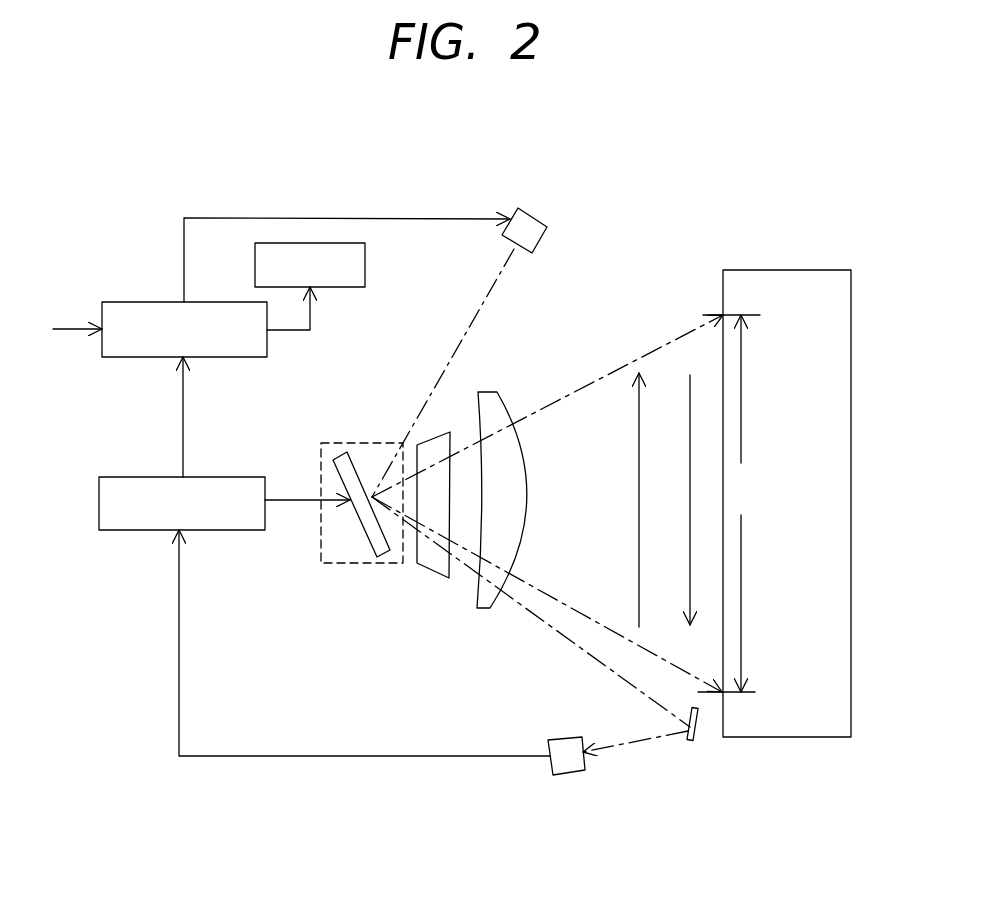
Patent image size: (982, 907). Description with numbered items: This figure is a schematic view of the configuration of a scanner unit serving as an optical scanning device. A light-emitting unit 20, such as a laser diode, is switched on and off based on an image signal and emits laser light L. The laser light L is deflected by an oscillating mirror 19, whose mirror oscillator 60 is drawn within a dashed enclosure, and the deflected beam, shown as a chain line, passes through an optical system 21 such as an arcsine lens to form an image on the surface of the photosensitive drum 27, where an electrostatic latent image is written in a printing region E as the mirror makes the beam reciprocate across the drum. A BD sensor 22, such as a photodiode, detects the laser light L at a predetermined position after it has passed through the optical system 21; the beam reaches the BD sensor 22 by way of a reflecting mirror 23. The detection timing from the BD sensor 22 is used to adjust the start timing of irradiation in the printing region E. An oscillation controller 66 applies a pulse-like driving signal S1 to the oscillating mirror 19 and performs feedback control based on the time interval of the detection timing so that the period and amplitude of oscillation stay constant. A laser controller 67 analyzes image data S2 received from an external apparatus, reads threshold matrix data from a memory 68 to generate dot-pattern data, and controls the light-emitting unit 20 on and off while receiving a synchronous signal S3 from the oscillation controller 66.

The oscillating mirror 19 is at (367, 443).
The light-emitting unit 20 is at (527, 225).
The optical system 21 is at (441, 435).
The BD sensor 22 is at (570, 763).
The reflecting mirror 23 is at (700, 740).
The photosensitive drum 27 is at (793, 285).
The mirror oscillator 60 is at (373, 535).
The oscillation controller 66 is at (125, 530).
The laser controller 67 is at (138, 302).
The memory 68 is at (335, 243).
The laser light L is at (480, 312).
The driving signal S1 is at (307, 491).
The image data S2 is at (77, 316).
The synchronous signal S3 is at (199, 417).
The printing region E is at (729, 503).